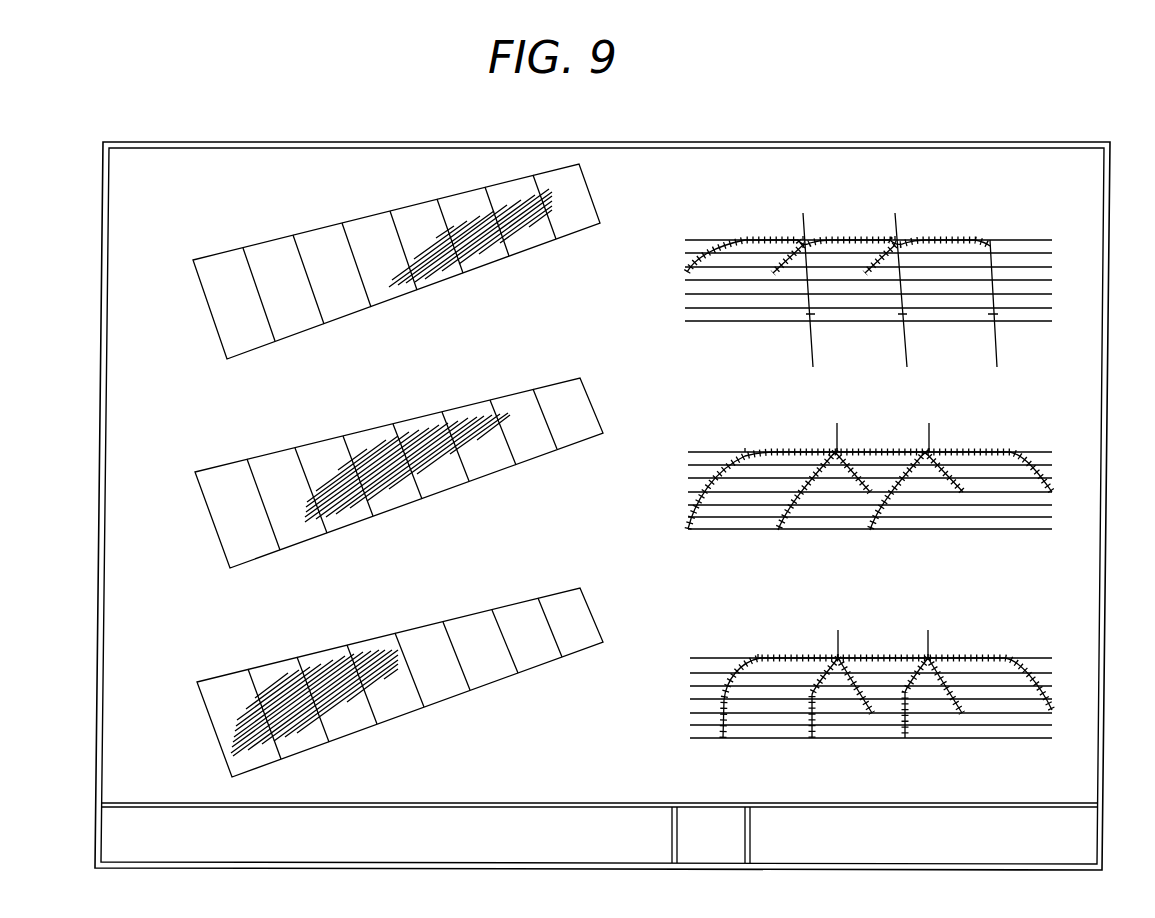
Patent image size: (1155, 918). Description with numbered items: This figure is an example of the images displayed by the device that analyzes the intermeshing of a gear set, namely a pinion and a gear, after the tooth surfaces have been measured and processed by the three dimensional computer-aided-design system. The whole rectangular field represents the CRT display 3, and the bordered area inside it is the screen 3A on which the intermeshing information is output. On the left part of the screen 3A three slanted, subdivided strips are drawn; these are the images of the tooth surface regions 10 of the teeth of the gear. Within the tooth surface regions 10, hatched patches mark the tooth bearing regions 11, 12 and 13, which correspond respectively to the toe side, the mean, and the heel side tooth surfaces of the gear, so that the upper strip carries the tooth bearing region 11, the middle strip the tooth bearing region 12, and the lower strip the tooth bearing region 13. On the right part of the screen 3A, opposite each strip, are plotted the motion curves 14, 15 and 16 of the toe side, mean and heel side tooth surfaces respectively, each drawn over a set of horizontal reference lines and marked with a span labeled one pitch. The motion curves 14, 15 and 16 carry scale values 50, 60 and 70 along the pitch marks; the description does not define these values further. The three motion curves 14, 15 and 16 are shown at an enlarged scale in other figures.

The CRT display 3 is at (891, 129).
The screen 3A is at (122, 626).
The tooth surface regions 10 is at (210, 311).
The tooth bearing region 11 is at (487, 240).
The tooth bearing region 12 is at (435, 475).
The tooth bearing region 13 is at (357, 708).
The motion curve 14 is at (943, 237).
The motion curve 15 is at (990, 452).
The motion curve 16 is at (978, 658).
The graph scale value 50 is at (945, 435).
The graph scale value 60 is at (840, 435).
The graph scale value 70 is at (770, 540).